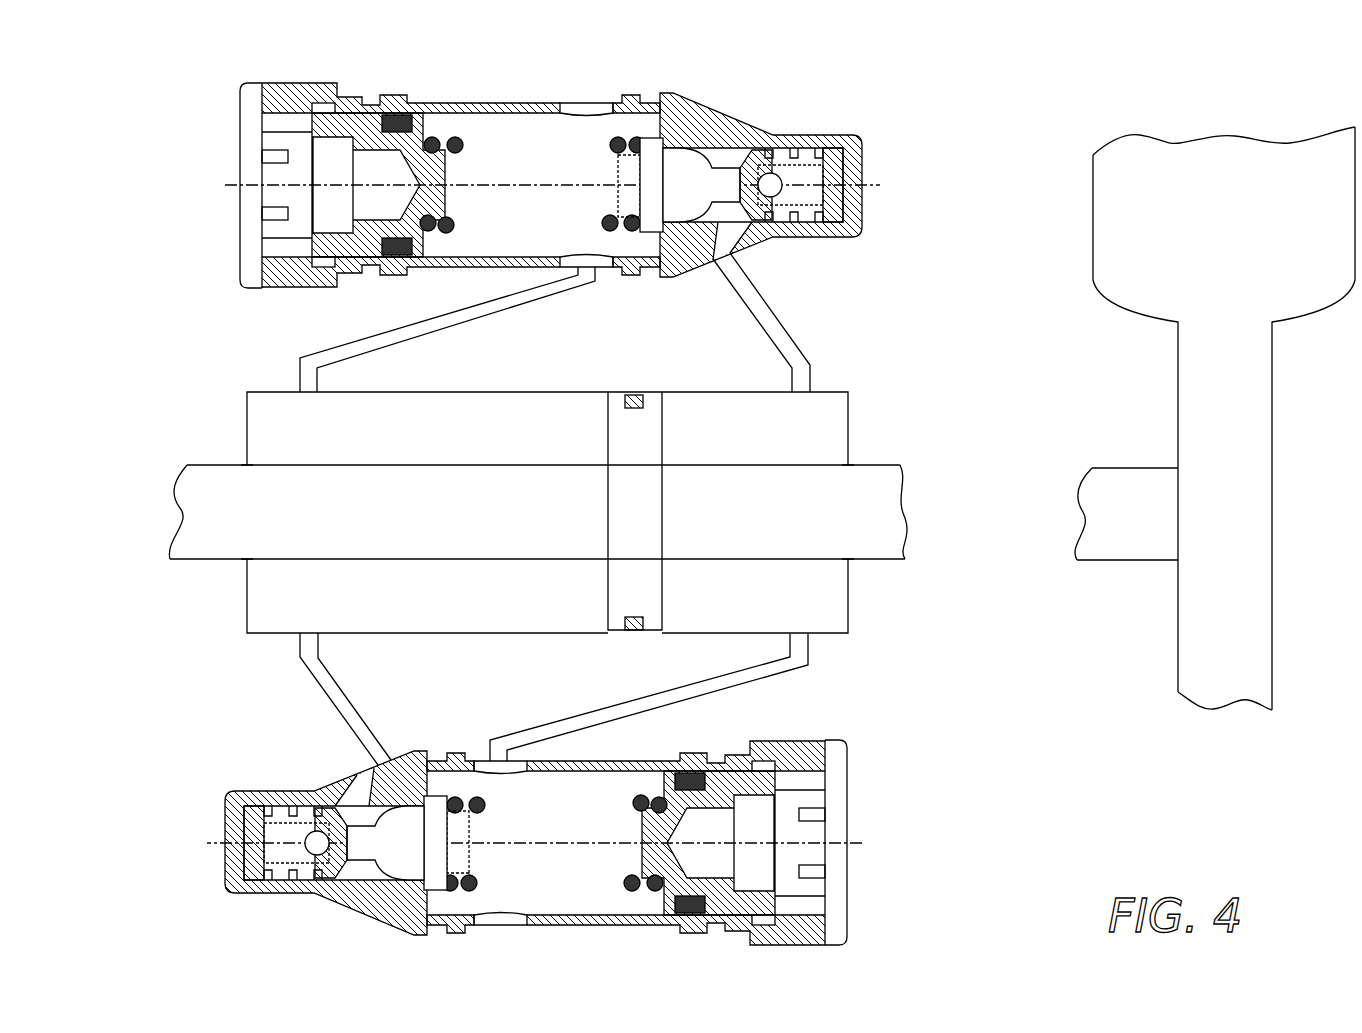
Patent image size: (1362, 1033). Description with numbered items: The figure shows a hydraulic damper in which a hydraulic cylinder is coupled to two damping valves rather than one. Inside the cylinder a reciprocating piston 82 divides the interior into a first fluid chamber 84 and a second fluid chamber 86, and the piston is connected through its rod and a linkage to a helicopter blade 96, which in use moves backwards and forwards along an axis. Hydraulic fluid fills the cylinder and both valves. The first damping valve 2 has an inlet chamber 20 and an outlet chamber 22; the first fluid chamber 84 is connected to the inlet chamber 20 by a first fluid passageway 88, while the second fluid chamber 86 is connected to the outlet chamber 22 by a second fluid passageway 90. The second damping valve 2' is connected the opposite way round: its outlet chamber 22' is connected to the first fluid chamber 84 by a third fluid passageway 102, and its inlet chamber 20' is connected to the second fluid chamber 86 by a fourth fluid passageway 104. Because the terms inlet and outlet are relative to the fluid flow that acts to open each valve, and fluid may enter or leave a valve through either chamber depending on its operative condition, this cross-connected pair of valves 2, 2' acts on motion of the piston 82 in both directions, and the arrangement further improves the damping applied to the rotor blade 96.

The first damping valve 2 is at (578, 855).
The second damping valve 2' is at (512, 174).
The inlet chamber 20 is at (376, 877).
The inlet chamber 20' is at (711, 151).
The outlet chamber 22 is at (626, 855).
The outlet chamber 22' is at (461, 174).
The piston 82 is at (652, 432).
The first fluid chamber 84 is at (250, 598).
The second fluid chamber 86 is at (838, 598).
The first fluid passageway 88 is at (328, 712).
The second fluid passageway 90 is at (607, 713).
The helicopter blade 96 is at (1270, 405).
The third fluid passageway 102 is at (494, 312).
The fourth fluid passageway 104 is at (772, 315).